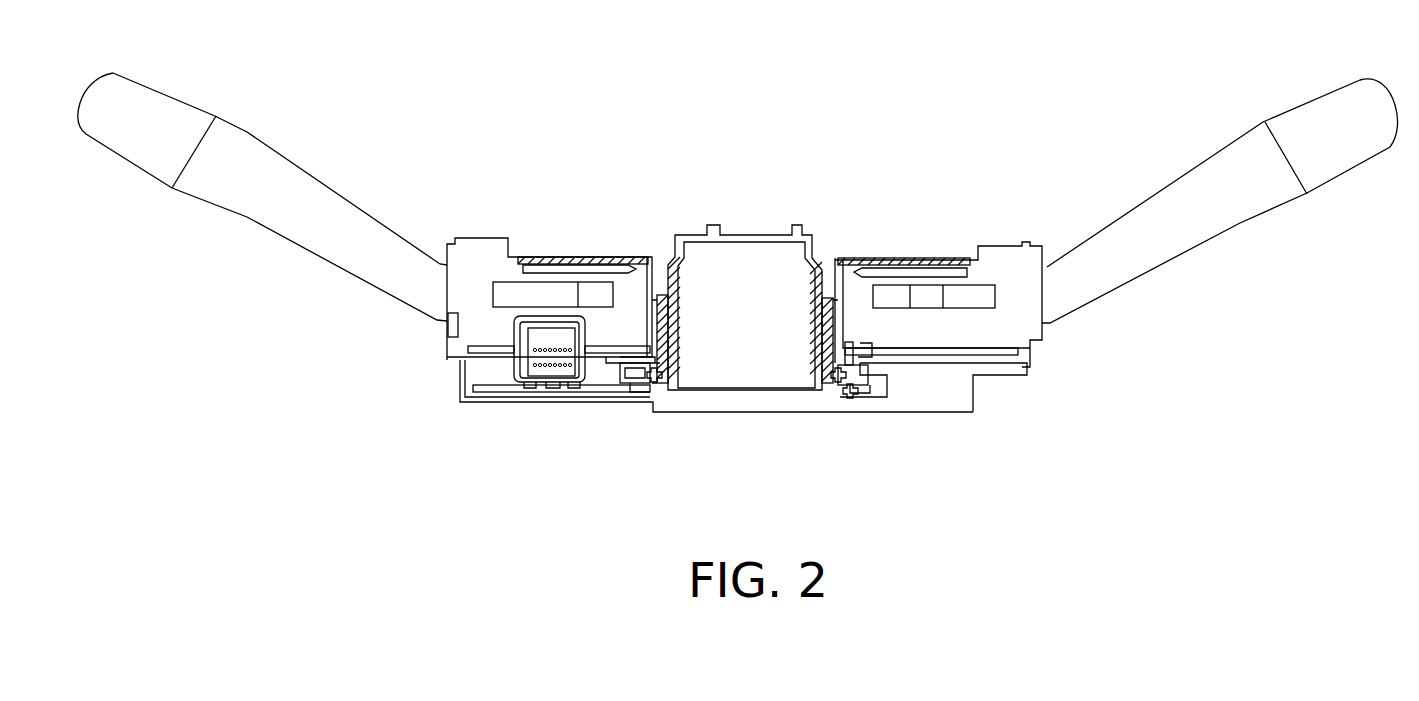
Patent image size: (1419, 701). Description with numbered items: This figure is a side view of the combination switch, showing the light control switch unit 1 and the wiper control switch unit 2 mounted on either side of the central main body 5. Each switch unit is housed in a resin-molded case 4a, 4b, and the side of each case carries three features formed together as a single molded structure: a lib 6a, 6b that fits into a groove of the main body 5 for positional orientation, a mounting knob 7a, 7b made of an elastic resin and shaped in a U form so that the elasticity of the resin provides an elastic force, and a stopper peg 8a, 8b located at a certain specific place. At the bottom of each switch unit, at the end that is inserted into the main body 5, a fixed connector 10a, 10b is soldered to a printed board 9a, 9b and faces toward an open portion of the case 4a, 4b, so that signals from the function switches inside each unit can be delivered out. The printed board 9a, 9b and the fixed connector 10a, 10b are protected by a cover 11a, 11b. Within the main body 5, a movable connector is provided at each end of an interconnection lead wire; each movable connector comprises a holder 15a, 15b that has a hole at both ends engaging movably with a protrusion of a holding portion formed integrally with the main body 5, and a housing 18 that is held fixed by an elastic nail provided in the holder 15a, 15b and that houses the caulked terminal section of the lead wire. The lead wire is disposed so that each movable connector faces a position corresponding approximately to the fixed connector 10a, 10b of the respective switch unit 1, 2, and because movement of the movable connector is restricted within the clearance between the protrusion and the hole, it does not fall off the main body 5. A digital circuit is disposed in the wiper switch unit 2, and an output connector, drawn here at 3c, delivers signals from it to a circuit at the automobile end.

The light control switch unit 1 is at (1047, 230).
The wiper control switch unit 2 is at (518, 228).
The connector 3c is at (550, 358).
The case 4a is at (1025, 340).
The case 4b is at (468, 336).
The main body 5 is at (867, 260).
The lib 6a is at (887, 270).
The lib 6b is at (563, 270).
The mounting knob 7a is at (960, 292).
The mounting knob 7b is at (598, 290).
The stopper peg 8a is at (943, 300).
The stopper peg 8b is at (547, 290).
The printed board 9a is at (925, 355).
The printed board 9b is at (587, 388).
The fixed connector 10a is at (872, 345).
The fixed connector 10b is at (623, 367).
The cover 11a is at (1018, 380).
The cover 11b is at (458, 402).
The holder 15a is at (846, 398).
The holder 15b is at (632, 381).
The housing 18 is at (648, 392).